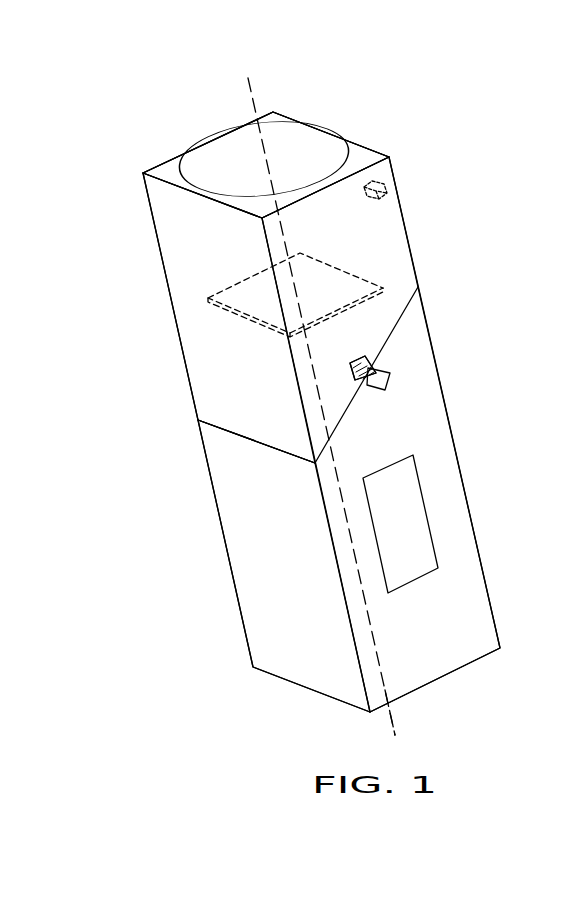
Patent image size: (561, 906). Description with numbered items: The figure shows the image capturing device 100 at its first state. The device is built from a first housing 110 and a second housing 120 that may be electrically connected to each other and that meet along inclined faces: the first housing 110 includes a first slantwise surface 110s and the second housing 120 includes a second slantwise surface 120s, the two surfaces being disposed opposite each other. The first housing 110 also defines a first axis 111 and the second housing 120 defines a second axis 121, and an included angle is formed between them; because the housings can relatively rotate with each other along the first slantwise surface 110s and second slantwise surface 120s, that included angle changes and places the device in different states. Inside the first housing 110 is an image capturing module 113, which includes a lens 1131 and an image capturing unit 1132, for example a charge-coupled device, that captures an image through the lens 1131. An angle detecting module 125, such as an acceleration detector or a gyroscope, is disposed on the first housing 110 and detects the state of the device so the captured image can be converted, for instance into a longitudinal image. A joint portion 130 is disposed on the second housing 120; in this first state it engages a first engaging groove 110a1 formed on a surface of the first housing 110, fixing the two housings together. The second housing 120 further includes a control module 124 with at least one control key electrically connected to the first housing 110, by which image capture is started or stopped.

The image capturing device 100 is at (345, 86).
The first housing 110 is at (402, 258).
The second housing 120 is at (432, 417).
The first slantwise surface 110s is at (222, 430).
The second slantwise surface 120s is at (248, 438).
The first axis 111 is at (256, 86).
The second axis 121 is at (393, 726).
The image capturing module 113 is at (478, 107).
The lens 1131 is at (336, 150).
The image capturing unit 1132 is at (350, 272).
The angle detecting module 125 is at (387, 197).
The control module 124 is at (408, 523).
The joint portion 130 is at (393, 380).
The first engaging groove 110a1 is at (366, 359).